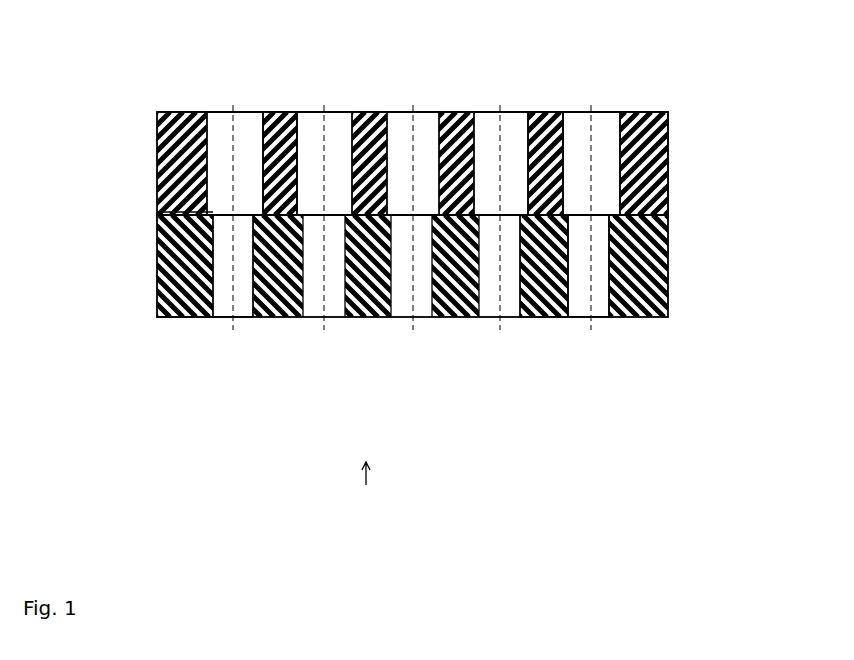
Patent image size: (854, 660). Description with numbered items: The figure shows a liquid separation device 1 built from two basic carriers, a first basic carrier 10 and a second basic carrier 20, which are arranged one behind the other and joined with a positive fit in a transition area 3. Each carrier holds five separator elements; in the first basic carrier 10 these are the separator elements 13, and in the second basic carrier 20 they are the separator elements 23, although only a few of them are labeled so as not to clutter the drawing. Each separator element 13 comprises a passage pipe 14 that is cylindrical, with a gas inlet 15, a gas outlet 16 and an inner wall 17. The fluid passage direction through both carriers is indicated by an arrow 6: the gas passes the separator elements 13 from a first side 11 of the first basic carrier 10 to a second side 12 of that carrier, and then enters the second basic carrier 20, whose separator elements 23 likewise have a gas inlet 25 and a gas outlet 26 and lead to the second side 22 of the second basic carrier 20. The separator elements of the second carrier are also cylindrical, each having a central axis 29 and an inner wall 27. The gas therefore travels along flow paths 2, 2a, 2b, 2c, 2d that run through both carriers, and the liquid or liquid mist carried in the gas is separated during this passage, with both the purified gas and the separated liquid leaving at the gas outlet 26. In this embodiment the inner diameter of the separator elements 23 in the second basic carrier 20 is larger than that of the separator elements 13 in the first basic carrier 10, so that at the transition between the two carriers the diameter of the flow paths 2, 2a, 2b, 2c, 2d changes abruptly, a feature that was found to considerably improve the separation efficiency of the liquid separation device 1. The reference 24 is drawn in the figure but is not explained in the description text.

The liquid separation device 1 is at (514, 58).
The flow path 2 is at (608, 112).
The flow path 2a is at (218, 112).
The flow path 2b is at (313, 112).
The flow path 2c is at (422, 112).
The flow path 2d is at (508, 112).
The transition area 3 is at (600, 215).
The arrow 6 is at (372, 477).
The first basic carrier 10 is at (668, 272).
The first side 11 is at (223, 317).
The second side 12 is at (223, 215).
The separator element 13 is at (242, 305).
The passage pipe 14 is at (579, 318).
The gas inlet 15 is at (585, 318).
The gas outlet 16 is at (669, 217).
The inner wall 17 is at (609, 240).
The second basic carrier 20 is at (668, 142).
The second side 22 is at (340, 112).
The separator element 23 is at (248, 112).
The channel section in second layer 24 is at (572, 112).
The gas inlet 25 is at (578, 212).
The gas outlet 26 is at (598, 112).
The inner wall 27 is at (617, 131).
The central axis 29 is at (586, 128).